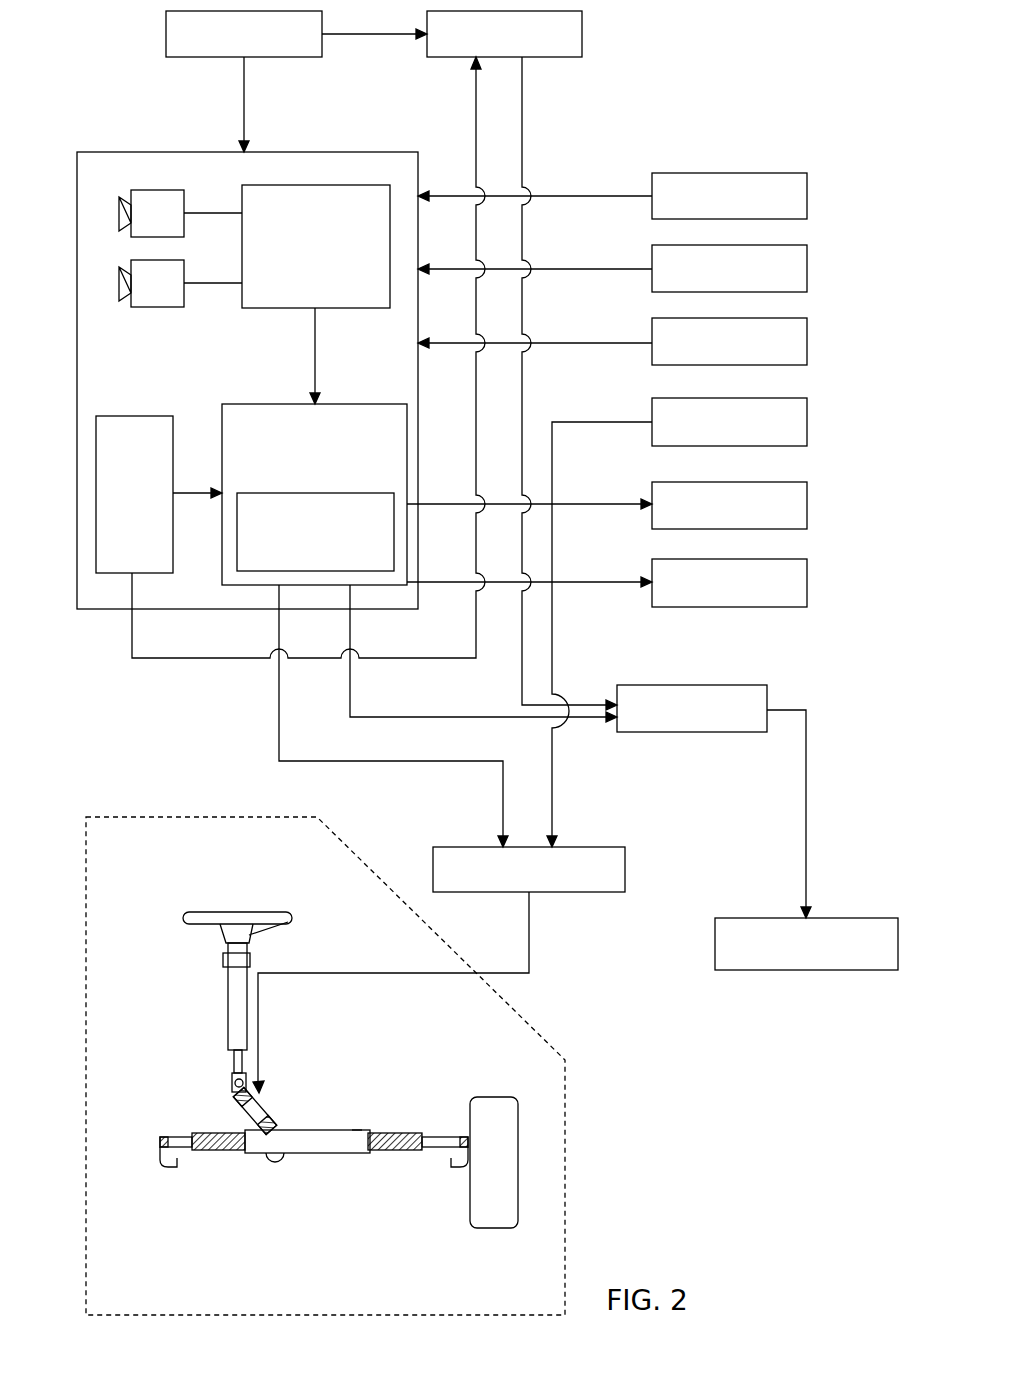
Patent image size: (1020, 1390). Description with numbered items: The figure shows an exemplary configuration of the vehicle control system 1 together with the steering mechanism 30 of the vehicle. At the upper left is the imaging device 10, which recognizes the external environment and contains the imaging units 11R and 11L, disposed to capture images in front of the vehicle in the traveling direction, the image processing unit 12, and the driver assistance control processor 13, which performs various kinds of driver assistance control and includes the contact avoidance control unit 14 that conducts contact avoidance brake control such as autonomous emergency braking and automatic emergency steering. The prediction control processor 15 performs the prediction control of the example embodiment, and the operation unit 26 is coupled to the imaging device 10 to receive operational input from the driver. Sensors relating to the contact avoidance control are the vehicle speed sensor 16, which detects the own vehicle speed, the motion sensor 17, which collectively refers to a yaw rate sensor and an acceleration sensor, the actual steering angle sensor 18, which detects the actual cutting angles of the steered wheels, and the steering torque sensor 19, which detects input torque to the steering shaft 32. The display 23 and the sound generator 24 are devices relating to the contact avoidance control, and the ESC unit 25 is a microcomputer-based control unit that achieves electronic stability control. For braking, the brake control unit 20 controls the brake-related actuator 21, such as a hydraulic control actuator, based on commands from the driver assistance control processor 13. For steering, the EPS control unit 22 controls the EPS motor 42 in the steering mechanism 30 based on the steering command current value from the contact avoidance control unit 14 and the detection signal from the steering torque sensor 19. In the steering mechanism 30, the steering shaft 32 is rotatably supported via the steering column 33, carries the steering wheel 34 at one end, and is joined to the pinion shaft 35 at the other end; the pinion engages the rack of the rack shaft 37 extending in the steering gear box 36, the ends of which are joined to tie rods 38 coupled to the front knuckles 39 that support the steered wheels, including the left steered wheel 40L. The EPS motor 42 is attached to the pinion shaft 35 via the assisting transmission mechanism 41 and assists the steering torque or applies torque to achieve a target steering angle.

The vehicle control system 1 is at (688, 997).
The imaging device 10 is at (381, 152).
The imaging unit 11L is at (160, 190).
The imaging unit 11R is at (160, 307).
The image processing unit 12 is at (316, 246).
The driver assistance control processor 13 is at (314, 494).
The contact avoidance control unit 14 is at (315, 532).
The prediction control processor 15 is at (134, 494).
The vehicle speed sensor 16 is at (729, 196).
The motion sensor 17 is at (729, 268).
The actual steering angle sensor 18 is at (729, 341).
The steering torque sensor 19 is at (729, 422).
The brake control unit 20 is at (692, 708).
The brake-related actuator 21 is at (806, 944).
The EPS control unit 22 is at (529, 869).
The display 23 is at (729, 505).
The sound generator 24 is at (729, 583).
The ESC unit 25 is at (504, 34).
The operation unit 26 is at (244, 34).
The steering mechanism 30 is at (86, 925).
The steering shaft 32 is at (236, 1060).
The steering column 33 is at (228, 1006).
The steering wheel 34 is at (183, 912).
The pinion shaft 35 is at (233, 1086).
The steering gear box 36 is at (330, 1155).
The rack shaft 37 is at (357, 1130).
The tie rod 38 is at (180, 1150).
The front knuckle 39 is at (166, 1168).
The left steered wheel 40L is at (497, 1228).
The assisting transmission mechanism 41 is at (245, 1126).
The EPS motor 42 is at (278, 1108).